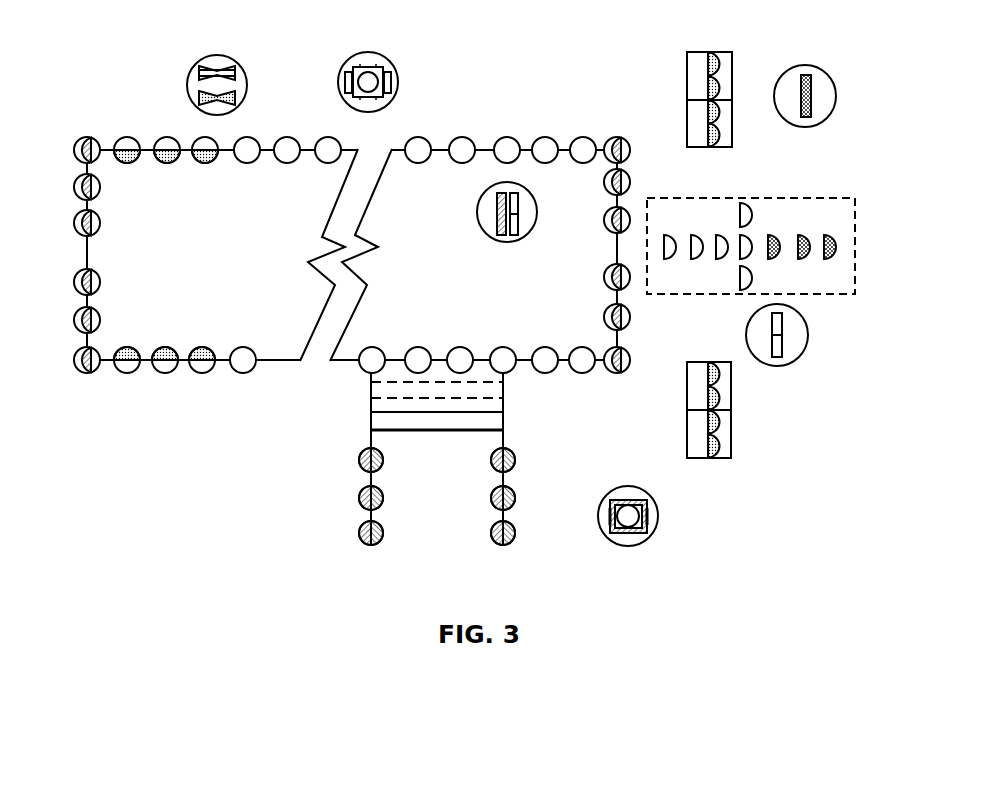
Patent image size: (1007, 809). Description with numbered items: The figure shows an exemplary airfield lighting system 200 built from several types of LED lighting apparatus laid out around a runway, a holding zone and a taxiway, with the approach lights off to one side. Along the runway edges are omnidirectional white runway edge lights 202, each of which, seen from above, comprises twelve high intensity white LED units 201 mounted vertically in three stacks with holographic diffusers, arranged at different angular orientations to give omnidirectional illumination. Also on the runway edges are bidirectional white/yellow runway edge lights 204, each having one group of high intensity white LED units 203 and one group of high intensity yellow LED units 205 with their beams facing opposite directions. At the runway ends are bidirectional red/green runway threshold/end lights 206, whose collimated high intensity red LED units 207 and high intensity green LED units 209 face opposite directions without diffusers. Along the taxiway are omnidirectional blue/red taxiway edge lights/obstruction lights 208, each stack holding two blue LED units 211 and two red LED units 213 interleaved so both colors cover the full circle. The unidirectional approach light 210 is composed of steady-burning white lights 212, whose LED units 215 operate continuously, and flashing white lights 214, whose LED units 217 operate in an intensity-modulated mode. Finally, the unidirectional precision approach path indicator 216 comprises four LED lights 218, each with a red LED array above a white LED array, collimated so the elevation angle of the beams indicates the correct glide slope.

The airfield lighting system 200 is at (150, 519).
The high intensity white LED units 201 is at (387, 73).
The omnidirectional white runway edge light 202 is at (397, 90).
The high intensity white LED units 203 is at (232, 73).
The bidirectional white/yellow runway edge light 204 is at (162, 137).
The high intensity yellow LED units 205 is at (233, 98).
The bidirectional red/green runway threshold/end light 206 is at (610, 232).
The high intensity red LED units 207 is at (497, 225).
The omnidirectional blue/red taxiway edge light/obstruction light 208 is at (600, 510).
The high intensity green LED units 209 is at (528, 225).
The unidirectional approach light 210 is at (828, 295).
The blue LED units 211 is at (634, 500).
The steady-burning white light 212 is at (725, 253).
The red LED units 213 is at (612, 520).
The flashing white light 214 is at (802, 238).
The LED units of the steady-burning light 215 is at (777, 357).
The unidirectional precision approach path indicator (PAPI) 216 is at (732, 73).
The LED units of the flashing light 217 is at (810, 83).
The LED lights 218 is at (717, 115).